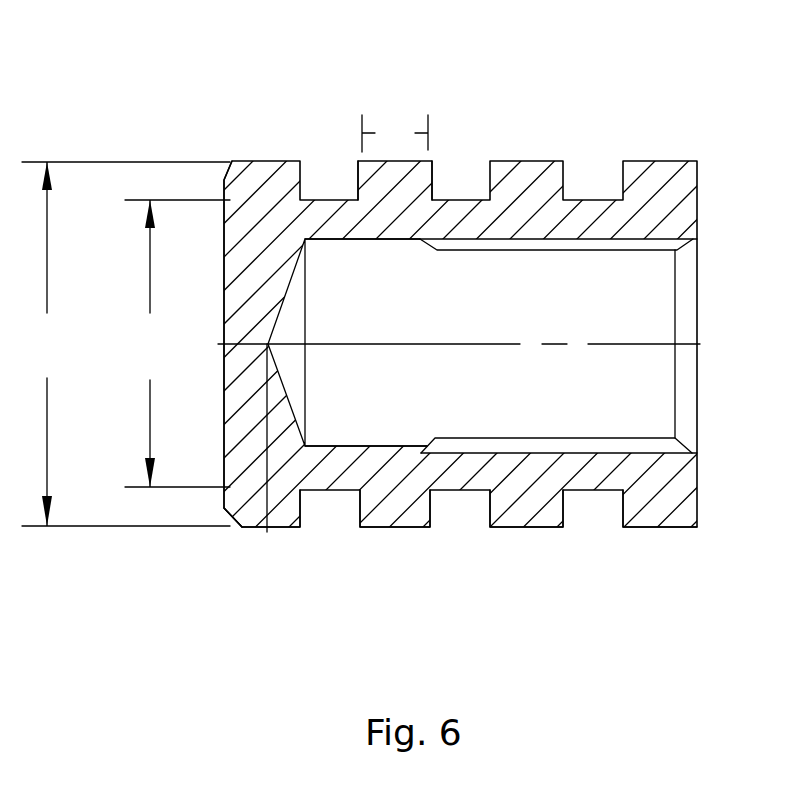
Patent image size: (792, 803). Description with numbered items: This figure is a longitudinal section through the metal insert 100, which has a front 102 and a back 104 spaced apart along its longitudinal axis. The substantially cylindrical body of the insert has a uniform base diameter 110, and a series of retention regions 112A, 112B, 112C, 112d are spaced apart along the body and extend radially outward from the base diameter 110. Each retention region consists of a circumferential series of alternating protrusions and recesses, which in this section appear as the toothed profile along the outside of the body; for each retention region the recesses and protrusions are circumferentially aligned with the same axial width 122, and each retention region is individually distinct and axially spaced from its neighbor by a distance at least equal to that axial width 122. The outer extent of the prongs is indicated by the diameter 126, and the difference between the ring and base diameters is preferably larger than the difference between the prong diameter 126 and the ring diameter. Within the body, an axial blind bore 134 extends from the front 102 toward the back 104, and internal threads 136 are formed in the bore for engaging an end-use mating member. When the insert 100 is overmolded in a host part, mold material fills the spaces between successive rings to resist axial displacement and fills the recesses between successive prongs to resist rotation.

The metal insert 100 is at (252, 35).
The front 102 is at (697, 218).
The back 104 is at (224, 262).
The base diameter 110 is at (150, 265).
The retention region 112A is at (665, 537).
The retention region 112B is at (516, 536).
The retention region 112C is at (378, 536).
The retention region 112d is at (258, 530).
The axial width 122 is at (395, 130).
The prong diameter 126 is at (47, 234).
The axial blind bore 134 is at (352, 441).
The internal threads 136 is at (495, 437).